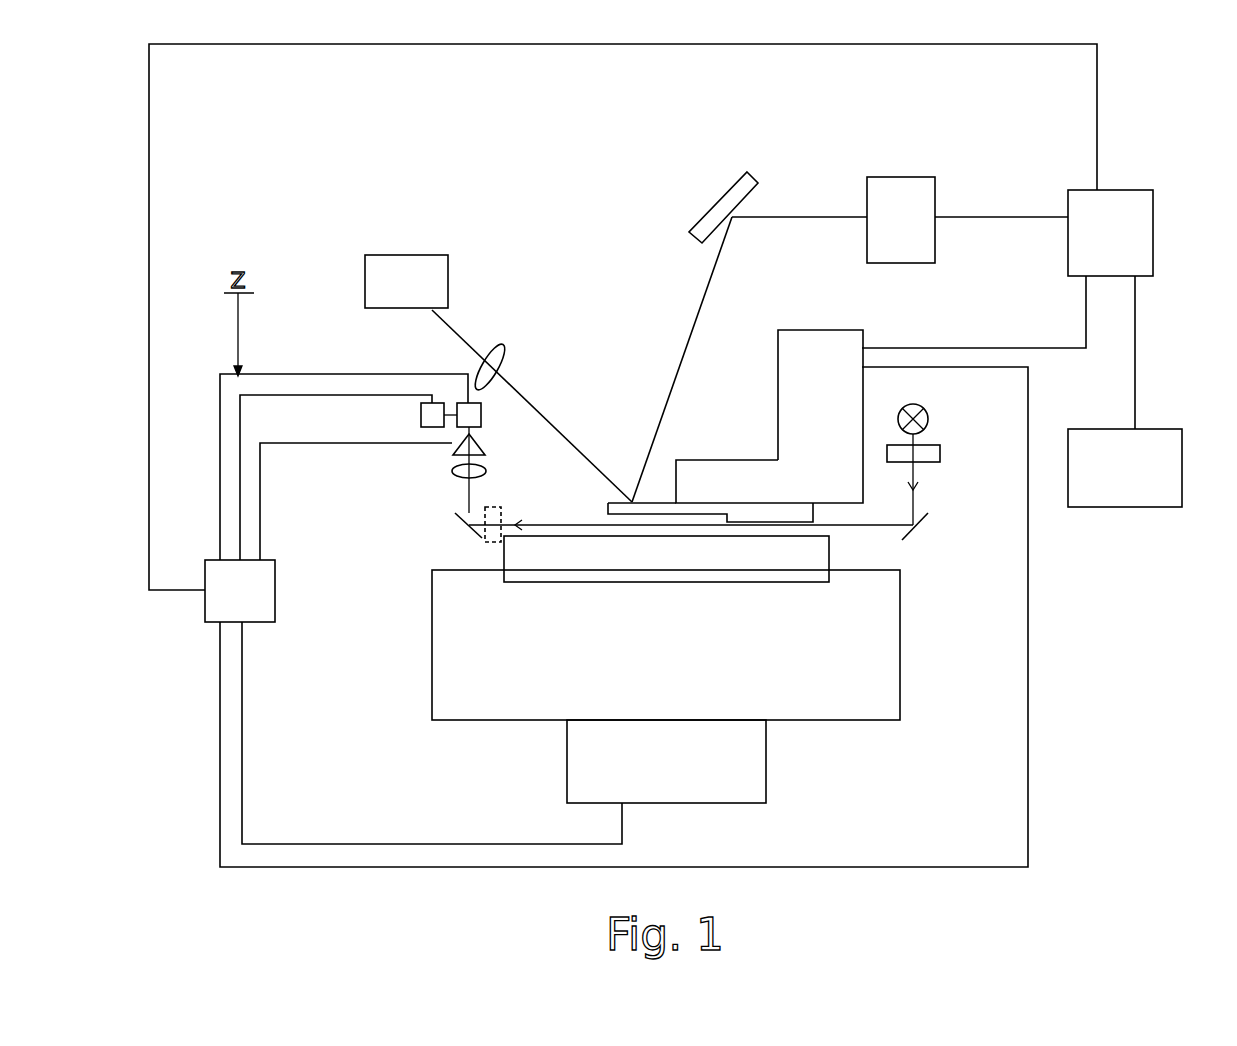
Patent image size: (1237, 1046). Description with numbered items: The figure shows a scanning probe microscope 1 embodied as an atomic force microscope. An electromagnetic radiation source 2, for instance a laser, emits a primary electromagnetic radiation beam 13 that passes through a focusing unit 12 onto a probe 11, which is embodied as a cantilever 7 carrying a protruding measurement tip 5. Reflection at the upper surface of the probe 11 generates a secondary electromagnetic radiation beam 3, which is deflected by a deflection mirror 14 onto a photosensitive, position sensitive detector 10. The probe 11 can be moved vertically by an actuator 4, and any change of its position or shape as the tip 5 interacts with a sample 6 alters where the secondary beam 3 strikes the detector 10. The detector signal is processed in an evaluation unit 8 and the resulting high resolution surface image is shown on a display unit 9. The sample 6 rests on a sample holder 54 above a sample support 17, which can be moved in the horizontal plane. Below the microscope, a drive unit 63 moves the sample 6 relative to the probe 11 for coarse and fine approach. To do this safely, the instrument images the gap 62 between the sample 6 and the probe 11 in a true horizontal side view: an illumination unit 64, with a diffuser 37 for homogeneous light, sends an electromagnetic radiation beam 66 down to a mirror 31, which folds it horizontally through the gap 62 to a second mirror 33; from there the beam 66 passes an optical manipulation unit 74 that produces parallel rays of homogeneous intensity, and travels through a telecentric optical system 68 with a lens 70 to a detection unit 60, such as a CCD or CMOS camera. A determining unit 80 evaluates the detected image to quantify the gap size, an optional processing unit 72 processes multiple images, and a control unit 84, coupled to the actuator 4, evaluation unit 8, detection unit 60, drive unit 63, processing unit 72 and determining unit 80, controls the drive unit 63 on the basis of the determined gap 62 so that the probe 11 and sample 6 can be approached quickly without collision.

The scanning probe microscope 1 is at (294, 236).
The electromagnetic radiation source 2 is at (407, 255).
The secondary electromagnetic radiation beam 3 is at (692, 318).
The actuator 4 is at (820, 330).
The measurement tip 5 is at (610, 513).
The sample 6 is at (553, 566).
The cantilever 7 is at (645, 503).
The evaluation unit 8 is at (1123, 190).
The display unit 9 is at (1157, 429).
The detector 10 is at (900, 177).
The probe 11 is at (625, 488).
The focusing unit 12 is at (503, 347).
The primary electromagnetic radiation beam 13 is at (458, 331).
The deflection mirror 14 is at (718, 210).
The sample support 17 is at (856, 705).
The mirror 31 is at (932, 528).
The mirror 33 is at (458, 518).
The diffuser 37 is at (940, 453).
The sample holder 54 is at (503, 580).
The detection unit 60 is at (452, 447).
The gap 62 is at (613, 522).
The drive unit 63 is at (580, 765).
The illumination unit 64 is at (916, 404).
The electromagnetic radiation beam 66 is at (884, 527).
The optical system 68 is at (450, 494).
The lens 70 is at (488, 472).
The processing unit 72 is at (421, 415).
The optical manipulation unit 74 is at (490, 545).
The determining unit 80 is at (482, 415).
The control unit 84 is at (226, 604).